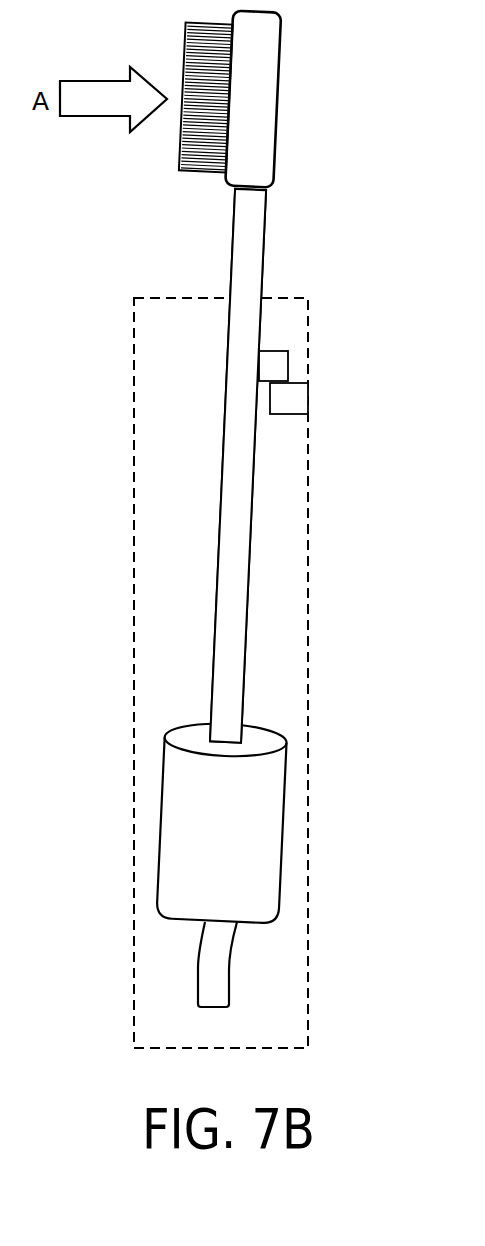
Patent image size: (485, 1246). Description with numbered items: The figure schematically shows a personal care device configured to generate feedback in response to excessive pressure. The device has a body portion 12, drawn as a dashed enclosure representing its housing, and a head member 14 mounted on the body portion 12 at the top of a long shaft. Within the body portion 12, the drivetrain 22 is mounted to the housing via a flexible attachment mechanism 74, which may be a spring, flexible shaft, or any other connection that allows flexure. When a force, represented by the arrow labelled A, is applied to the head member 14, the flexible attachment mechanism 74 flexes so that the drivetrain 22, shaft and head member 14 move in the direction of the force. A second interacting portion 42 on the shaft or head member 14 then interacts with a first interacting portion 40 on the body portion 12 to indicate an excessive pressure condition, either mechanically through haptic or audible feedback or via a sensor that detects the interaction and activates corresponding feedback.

The head member 14 is at (275, 143).
The body portion 12 is at (308, 665).
The second interacting portion 42 is at (288, 357).
The first interacting portion 40 is at (308, 398).
The drivetrain 22 is at (281, 815).
The flexible attachment mechanism 74 is at (230, 950).